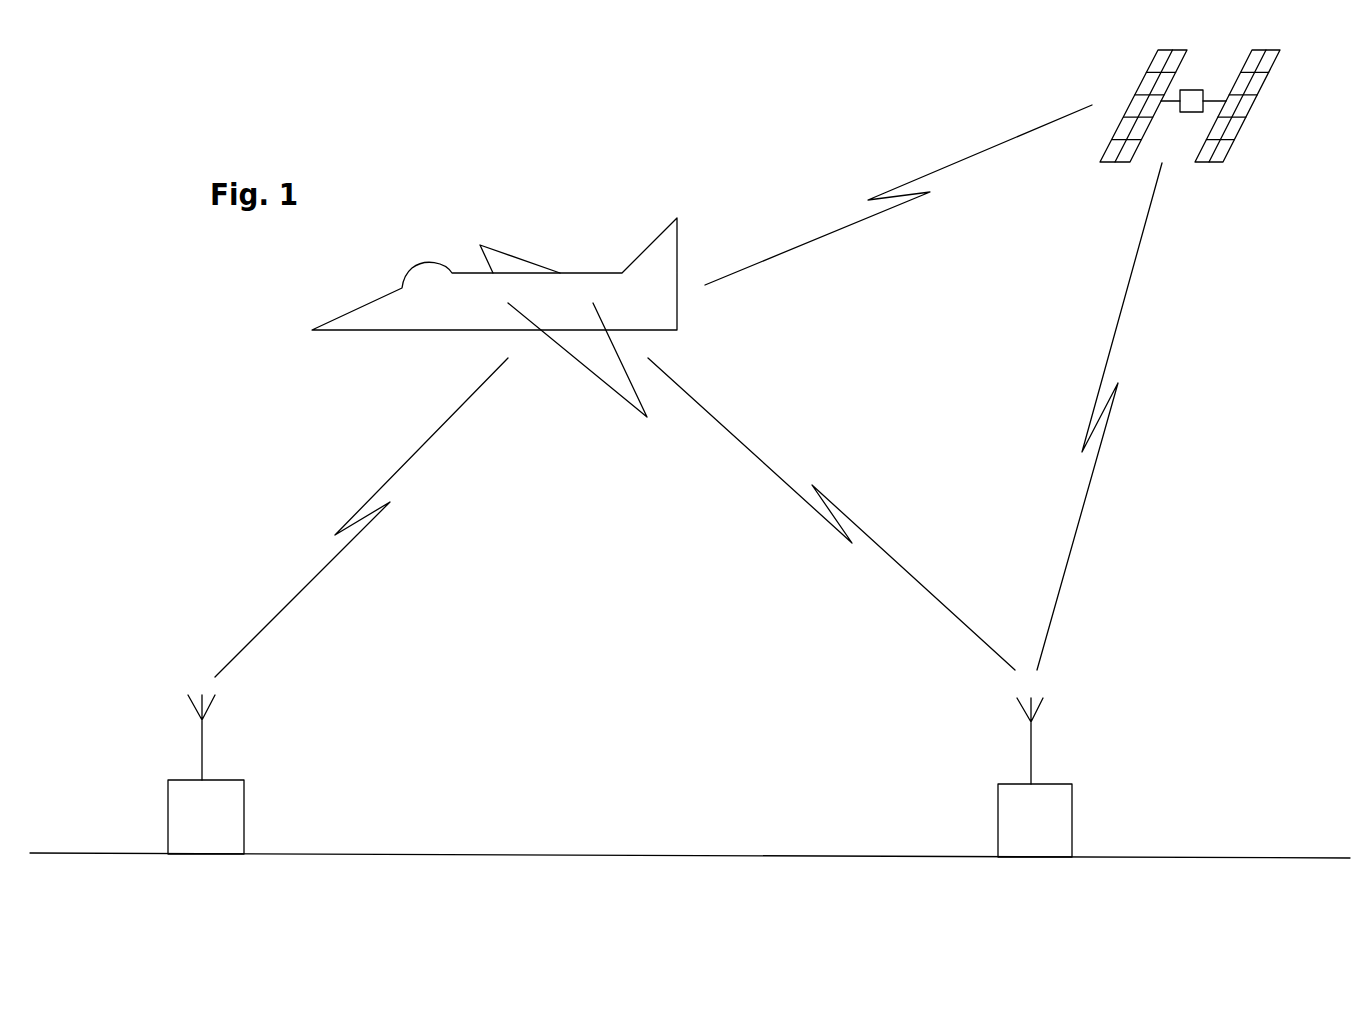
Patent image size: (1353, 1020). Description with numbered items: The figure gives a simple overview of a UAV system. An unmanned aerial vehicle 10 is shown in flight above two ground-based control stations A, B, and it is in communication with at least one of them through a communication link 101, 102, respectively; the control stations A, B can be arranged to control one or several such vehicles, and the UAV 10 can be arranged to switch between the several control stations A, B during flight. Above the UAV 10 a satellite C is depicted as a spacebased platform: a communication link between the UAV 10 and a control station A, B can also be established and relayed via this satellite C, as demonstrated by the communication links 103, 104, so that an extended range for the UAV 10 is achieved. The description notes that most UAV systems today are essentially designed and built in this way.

The unmanned aerial vehicle 10 is at (677, 218).
The communication link 101 is at (412, 458).
The communication link 102 is at (715, 420).
The communication link 103 is at (1122, 315).
The communication link 104 is at (853, 222).
The control station A is at (244, 792).
The control station B is at (1072, 795).
The satellite C is at (1257, 95).